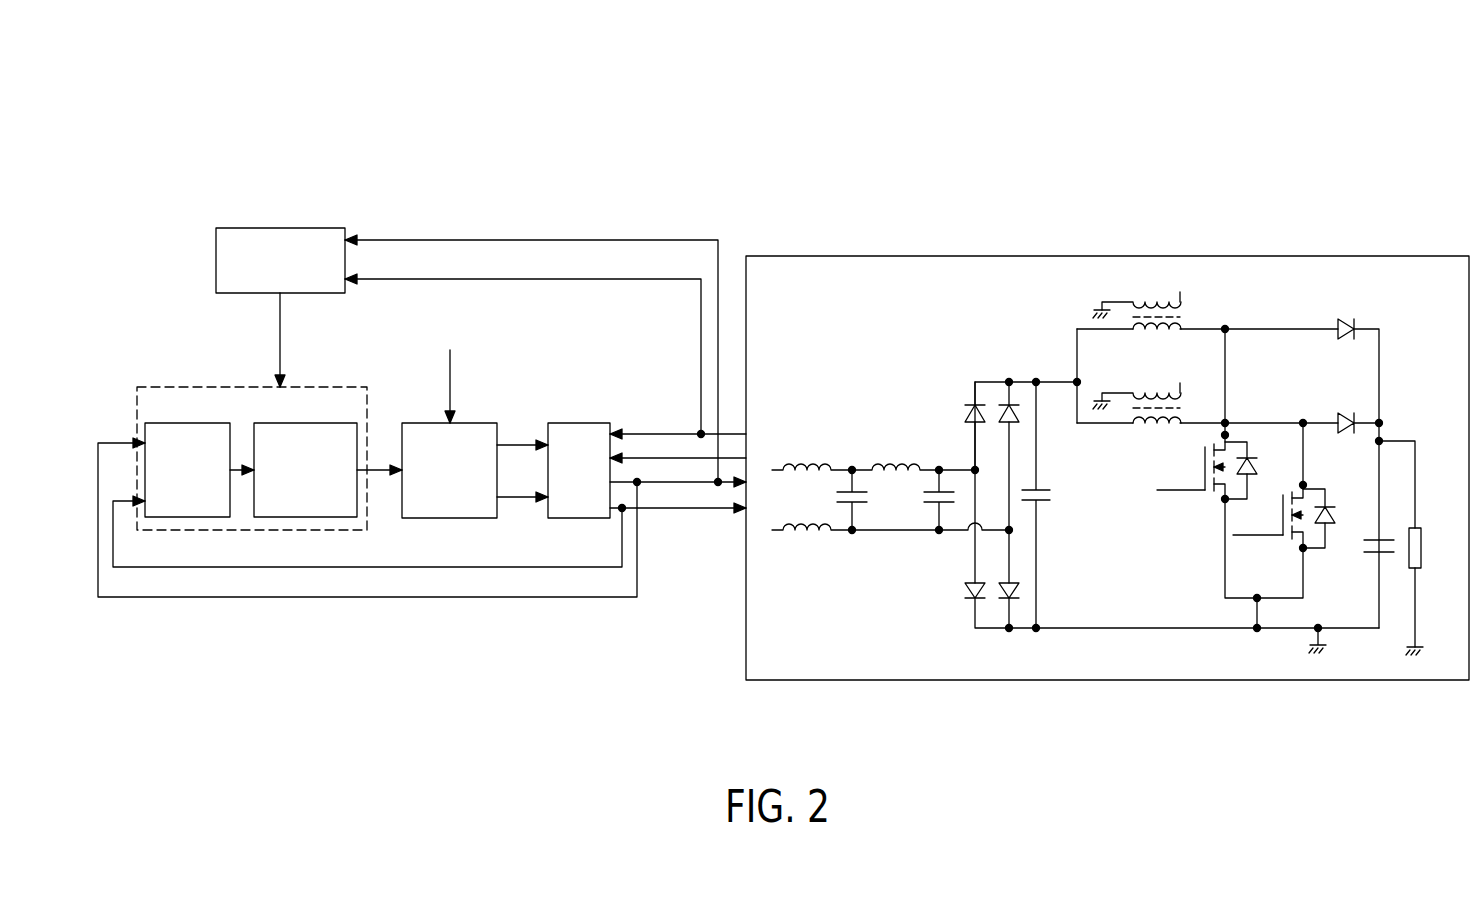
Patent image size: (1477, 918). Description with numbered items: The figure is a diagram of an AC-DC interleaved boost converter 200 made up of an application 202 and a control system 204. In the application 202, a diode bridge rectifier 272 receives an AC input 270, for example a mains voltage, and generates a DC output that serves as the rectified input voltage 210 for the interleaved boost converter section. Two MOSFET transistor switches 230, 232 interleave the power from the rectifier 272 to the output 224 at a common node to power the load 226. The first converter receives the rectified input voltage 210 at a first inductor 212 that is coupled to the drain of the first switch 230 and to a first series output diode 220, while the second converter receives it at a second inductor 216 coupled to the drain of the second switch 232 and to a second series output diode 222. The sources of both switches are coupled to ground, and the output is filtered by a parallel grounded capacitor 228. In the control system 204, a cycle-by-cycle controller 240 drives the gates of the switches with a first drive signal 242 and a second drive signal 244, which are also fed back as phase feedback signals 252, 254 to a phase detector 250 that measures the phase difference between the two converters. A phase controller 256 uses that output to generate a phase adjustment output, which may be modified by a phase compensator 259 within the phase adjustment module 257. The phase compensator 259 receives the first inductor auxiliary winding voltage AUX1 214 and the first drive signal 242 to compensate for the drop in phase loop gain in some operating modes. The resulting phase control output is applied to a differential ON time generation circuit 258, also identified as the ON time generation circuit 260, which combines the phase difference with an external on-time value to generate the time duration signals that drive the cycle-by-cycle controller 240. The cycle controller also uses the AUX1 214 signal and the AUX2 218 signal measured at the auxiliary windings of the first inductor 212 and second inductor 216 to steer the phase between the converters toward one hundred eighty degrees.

The AC-DC interleaved boost converter 200 is at (1262, 709).
The application 202 is at (1367, 256).
The control system 204 is at (316, 662).
The rectified input voltage 210 is at (1047, 378).
The first inductor 212 is at (1152, 301).
The AUX1 signal 214 is at (634, 432).
The second inductor 216 is at (1158, 429).
The second auxiliary signal AUX2 218 is at (643, 456).
The first series output diode 220 is at (1342, 322).
The second series output diode 222 is at (1338, 414).
The output 224 is at (1410, 413).
The load 226 is at (1421, 536).
The capacitor 228 is at (1368, 556).
The first switch 230 is at (1269, 470).
The second switch 232 is at (1346, 492).
The cycle-by-cycle controller 240 is at (572, 423).
The first drive signal 242 is at (650, 486).
The second drive signal 244 is at (712, 512).
The phase detector 250 is at (202, 423).
The phase feedback signal 252 is at (122, 438).
The phase feedback signal 254 is at (133, 510).
The phase controller 256 is at (308, 423).
The phase adjustment module 257 is at (156, 387).
The differential ON time generation circuit 258 is at (420, 423).
The phase compensator 259 is at (251, 228).
The differential ON time generation circuit 260 is at (455, 392).
The AC input 270 is at (765, 511).
The diode bridge rectifier 272 is at (846, 393).